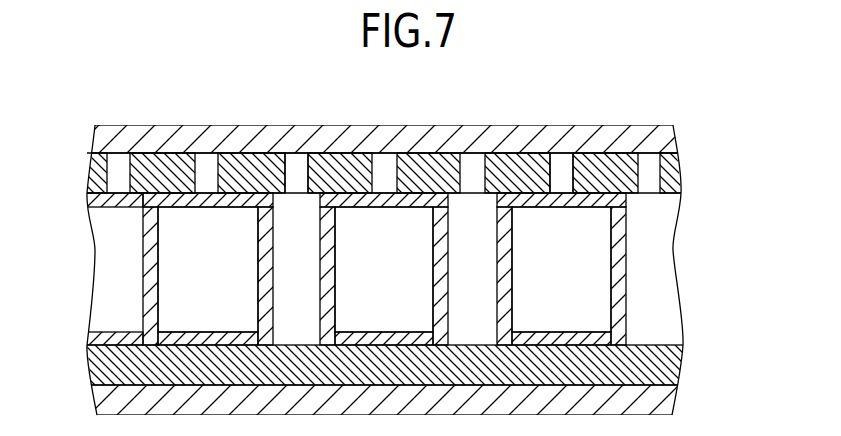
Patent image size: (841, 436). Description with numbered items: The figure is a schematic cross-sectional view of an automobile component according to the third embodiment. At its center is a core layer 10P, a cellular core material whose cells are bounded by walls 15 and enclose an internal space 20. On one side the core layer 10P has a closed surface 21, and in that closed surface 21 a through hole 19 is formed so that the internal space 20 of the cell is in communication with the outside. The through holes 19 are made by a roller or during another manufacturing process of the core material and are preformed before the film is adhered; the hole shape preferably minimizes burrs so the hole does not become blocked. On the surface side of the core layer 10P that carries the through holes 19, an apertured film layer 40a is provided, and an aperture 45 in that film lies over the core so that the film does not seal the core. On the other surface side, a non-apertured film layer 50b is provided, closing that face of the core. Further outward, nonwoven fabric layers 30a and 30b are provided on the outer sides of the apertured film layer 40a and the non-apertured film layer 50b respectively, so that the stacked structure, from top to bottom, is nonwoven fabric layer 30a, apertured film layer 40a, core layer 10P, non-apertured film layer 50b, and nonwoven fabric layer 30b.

The core layer 10P is at (690, 269).
The partition wall 15 is at (152, 204).
The through hole 19 is at (189, 203).
The cavity 20 is at (196, 284).
The closed surface 21 is at (299, 184).
The nonwoven fabric layer 30a is at (670, 143).
The nonwoven fabric layer 30b is at (672, 404).
The apertured film layer 40a is at (676, 172).
The opening 45 is at (560, 163).
The non-apertured film layer 50b is at (676, 362).